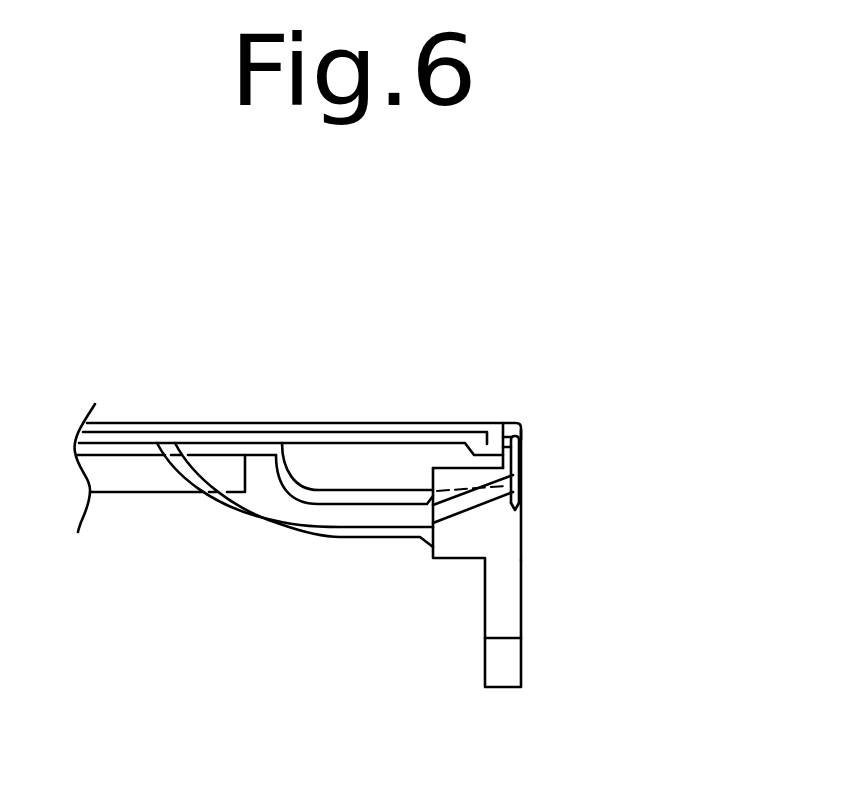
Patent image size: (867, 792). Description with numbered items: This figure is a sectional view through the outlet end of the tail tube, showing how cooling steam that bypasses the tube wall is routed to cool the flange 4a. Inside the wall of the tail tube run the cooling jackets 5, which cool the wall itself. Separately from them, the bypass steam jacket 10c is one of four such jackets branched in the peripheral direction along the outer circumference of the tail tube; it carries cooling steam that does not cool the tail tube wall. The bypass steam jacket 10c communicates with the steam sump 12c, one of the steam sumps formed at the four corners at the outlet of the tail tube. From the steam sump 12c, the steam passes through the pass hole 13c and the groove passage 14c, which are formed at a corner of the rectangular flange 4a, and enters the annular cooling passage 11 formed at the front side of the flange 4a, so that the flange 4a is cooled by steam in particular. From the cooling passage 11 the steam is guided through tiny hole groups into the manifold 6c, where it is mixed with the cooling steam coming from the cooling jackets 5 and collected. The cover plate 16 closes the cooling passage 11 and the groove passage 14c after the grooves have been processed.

The cooling jackets 5 is at (118, 425).
The manifold 6c is at (358, 472).
The annular cooling passage 11 is at (527, 436).
The groove passage 14c is at (524, 461).
The cover plate 16 is at (524, 497).
The pass hole 13c is at (462, 502).
The flange 4a is at (500, 615).
The bypass steam jacket 10c is at (142, 476).
The steam sump 12c is at (278, 503).